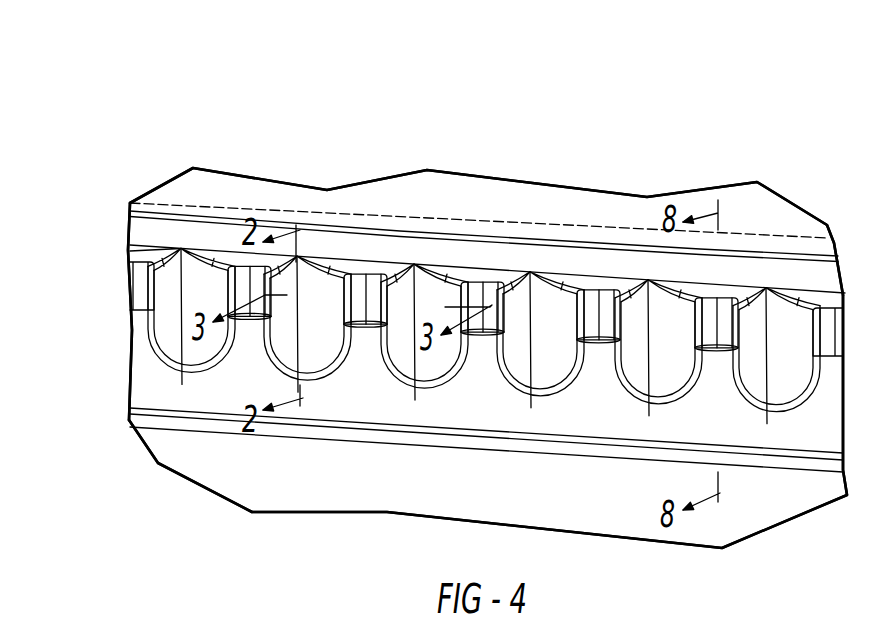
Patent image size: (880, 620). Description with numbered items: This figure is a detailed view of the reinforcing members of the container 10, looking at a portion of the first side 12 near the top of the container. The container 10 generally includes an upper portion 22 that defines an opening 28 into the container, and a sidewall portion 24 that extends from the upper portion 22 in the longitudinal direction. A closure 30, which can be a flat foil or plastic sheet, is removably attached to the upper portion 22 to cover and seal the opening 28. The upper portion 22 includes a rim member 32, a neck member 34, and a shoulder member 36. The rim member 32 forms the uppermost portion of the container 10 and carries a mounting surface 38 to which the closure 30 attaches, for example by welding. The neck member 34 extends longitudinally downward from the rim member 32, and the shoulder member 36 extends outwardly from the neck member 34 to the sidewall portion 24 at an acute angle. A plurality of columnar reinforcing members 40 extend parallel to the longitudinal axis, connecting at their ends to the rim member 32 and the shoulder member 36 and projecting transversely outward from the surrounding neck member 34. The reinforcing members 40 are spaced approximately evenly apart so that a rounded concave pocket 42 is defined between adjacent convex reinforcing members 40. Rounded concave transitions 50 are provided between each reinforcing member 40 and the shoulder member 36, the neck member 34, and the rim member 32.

The container 10 is at (268, 108).
The first side 12 is at (440, 489).
The upper portion 22 is at (138, 358).
The sidewall portion 24 is at (230, 474).
The opening 28 is at (758, 235).
The closure 30 is at (540, 203).
The rim member 32 is at (148, 230).
The neck member 34 is at (138, 279).
The shoulder member 36 is at (150, 388).
The mounting surface 38 is at (444, 235).
The reinforcing member 40 is at (663, 357).
The pocket 42 is at (368, 299).
The concave transition 50 is at (573, 373).